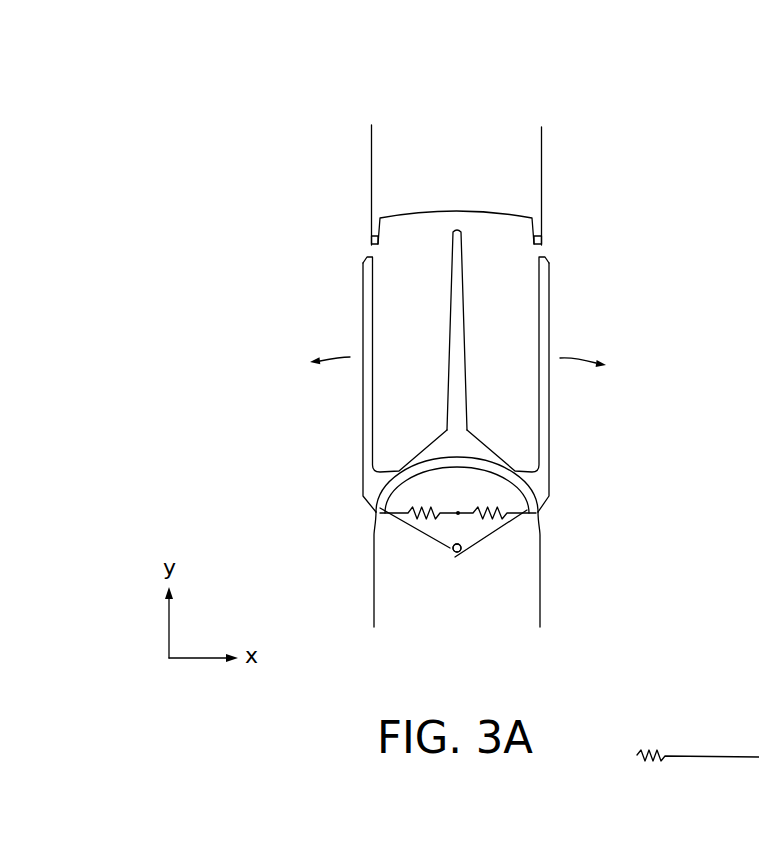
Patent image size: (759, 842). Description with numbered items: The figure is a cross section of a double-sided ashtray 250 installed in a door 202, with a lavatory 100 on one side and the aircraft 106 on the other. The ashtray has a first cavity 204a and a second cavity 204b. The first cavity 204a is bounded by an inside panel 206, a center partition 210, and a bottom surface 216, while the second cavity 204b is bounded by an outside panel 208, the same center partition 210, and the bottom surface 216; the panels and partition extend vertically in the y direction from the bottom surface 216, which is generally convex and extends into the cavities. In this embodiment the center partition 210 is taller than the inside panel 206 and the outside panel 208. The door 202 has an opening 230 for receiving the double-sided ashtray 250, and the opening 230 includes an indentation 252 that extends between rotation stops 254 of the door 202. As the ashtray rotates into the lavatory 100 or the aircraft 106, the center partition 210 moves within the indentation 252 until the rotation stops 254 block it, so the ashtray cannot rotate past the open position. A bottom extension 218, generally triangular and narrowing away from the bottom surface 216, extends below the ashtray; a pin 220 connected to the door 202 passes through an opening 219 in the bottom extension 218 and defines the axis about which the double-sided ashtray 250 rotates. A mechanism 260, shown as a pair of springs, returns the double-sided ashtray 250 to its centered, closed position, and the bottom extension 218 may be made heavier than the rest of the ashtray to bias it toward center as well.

The lavatory 100 is at (672, 168).
The aircraft 106 is at (193, 300).
The door 202 is at (512, 128).
The first cavity 204a is at (532, 346).
The second cavity 204b is at (376, 443).
The inside panel 206 is at (551, 458).
The outside panel 208 is at (363, 395).
The center partition 210 is at (452, 270).
The bottom surface 216 is at (381, 505).
The bottom extension 218 is at (484, 533).
The opening 219 is at (448, 563).
The pin 220 is at (446, 551).
The opening 230 is at (430, 215).
The double-sided ashtray 250 is at (235, 117).
The indentation 252 is at (390, 247).
The rotation stops 254 is at (372, 236).
The mechanism 260 is at (513, 517).